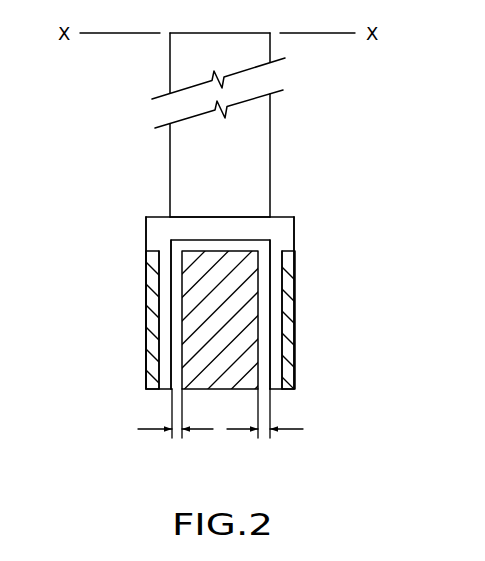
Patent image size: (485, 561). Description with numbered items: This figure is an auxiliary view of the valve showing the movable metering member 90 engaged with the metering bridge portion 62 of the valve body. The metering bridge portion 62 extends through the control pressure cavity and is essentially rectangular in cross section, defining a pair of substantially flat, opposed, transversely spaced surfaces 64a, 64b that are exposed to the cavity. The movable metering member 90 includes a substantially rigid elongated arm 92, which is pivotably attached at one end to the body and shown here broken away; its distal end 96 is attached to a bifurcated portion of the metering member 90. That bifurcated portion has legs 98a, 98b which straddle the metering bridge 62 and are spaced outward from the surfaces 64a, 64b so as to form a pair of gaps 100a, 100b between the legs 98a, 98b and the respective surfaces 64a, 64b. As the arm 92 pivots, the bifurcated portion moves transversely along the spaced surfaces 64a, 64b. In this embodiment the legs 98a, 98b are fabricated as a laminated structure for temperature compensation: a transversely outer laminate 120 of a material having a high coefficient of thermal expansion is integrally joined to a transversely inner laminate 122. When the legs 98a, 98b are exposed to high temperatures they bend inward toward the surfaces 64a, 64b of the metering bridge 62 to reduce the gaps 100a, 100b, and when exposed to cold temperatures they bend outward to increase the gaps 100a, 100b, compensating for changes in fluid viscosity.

The metering bridge portion 62 is at (255, 262).
The transversely spaced surface 64a is at (275, 333).
The transversely spaced surface 64b is at (183, 290).
The movable metering member 90 is at (281, 217).
The elongated arm 92 is at (262, 128).
The distal end 96 is at (220, 217).
The leg 98a is at (291, 242).
The leg 98b is at (157, 230).
The gap 100a is at (263, 440).
The gap 100b is at (173, 435).
The transversely outer laminate 120 is at (148, 313).
The transversely inner laminate 122 is at (160, 365).